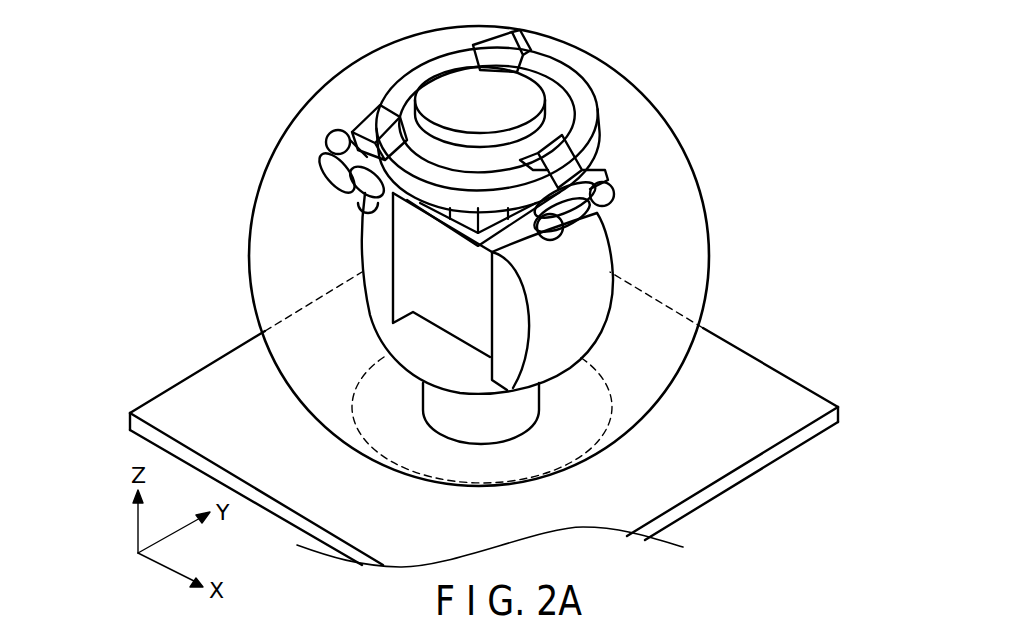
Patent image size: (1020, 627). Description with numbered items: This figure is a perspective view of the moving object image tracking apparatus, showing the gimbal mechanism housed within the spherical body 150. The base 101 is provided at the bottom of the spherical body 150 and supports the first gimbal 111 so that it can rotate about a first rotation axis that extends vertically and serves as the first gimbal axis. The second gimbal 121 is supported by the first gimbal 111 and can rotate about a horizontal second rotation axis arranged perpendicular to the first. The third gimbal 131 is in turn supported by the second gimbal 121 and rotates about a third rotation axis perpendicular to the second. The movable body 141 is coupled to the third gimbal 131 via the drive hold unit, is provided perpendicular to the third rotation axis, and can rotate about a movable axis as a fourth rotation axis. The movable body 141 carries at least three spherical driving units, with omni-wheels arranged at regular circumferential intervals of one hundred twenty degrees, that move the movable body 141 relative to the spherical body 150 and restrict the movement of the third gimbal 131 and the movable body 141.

The base 101 is at (750, 414).
The first gimbal 111 is at (593, 255).
The second gimbal 121 is at (412, 267).
The third gimbal 131 is at (470, 216).
The movable body 141 is at (572, 108).
The spherical body 150 is at (575, 47).